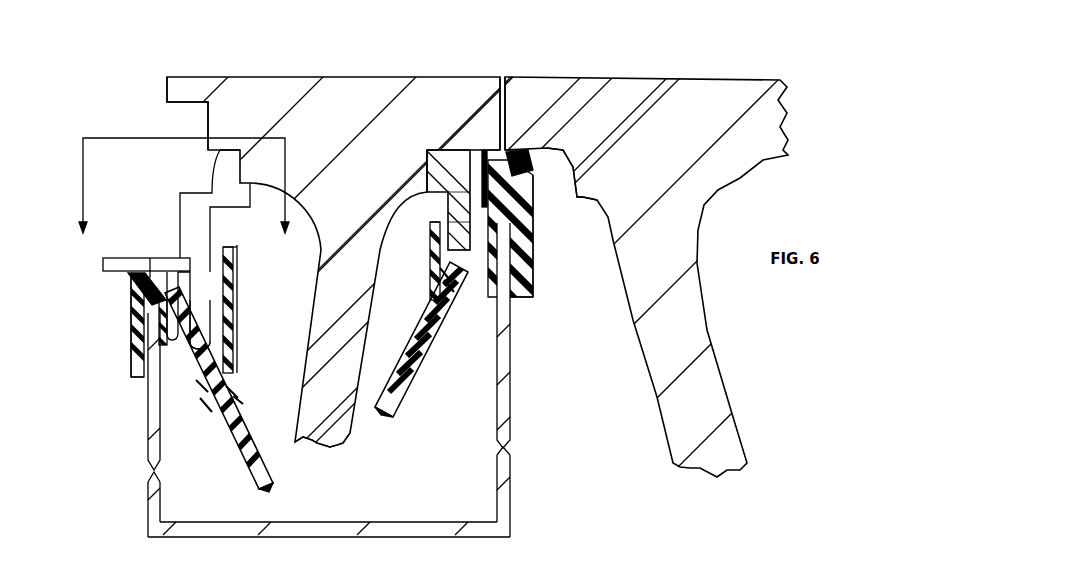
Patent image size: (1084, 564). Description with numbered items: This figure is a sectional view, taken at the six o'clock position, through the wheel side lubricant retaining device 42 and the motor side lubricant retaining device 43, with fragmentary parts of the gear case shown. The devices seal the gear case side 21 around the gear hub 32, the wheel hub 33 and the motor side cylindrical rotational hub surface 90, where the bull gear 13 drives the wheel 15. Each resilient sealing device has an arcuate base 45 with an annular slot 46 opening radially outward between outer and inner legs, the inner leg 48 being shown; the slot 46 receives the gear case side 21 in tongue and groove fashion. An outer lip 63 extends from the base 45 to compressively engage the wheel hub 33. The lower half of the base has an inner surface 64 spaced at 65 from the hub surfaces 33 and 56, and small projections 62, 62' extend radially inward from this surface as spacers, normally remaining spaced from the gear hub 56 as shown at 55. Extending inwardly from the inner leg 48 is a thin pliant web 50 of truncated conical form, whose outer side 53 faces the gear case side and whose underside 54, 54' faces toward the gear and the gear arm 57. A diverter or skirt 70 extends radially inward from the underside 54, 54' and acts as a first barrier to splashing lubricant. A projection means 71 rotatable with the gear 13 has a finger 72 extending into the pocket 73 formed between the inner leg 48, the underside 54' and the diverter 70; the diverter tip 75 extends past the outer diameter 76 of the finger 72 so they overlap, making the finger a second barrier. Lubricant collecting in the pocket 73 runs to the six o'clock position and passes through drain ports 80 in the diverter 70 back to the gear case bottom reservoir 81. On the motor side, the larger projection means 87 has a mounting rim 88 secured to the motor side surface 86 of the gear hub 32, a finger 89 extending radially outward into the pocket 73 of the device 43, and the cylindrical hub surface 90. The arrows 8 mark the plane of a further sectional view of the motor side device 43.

The section line 8- 8 is at (184, 196).
The bull gear 13 is at (352, 440).
The wheel 15 is at (678, 308).
The gear case side 21 is at (505, 408).
The gear hub 32 is at (343, 108).
The wheel hub surface 33 is at (552, 146).
The wheel side sealing device 42 is at (530, 256).
The motor side sealing device 43 is at (128, 338).
The base 45 is at (140, 298).
The annular slot 46 is at (142, 378).
The inner leg 48 is at (170, 338).
The web 50 is at (227, 428).
The outer side of web 53 is at (206, 408).
The underside of web 54 is at (321, 449).
The underside of web 54' is at (260, 392).
The spacing of projections from hub 55 is at (174, 272).
The gear hub 56 is at (490, 145).
The gear arm 57 is at (356, 324).
The projection 62 is at (446, 200).
The projection 62' is at (221, 284).
The outer lip 63 is at (130, 277).
The lower inner diameter surface 64 is at (513, 158).
The spacing 65 is at (152, 277).
The diverter 70 is at (230, 318).
The projection means 71 is at (446, 225).
The finger 72 is at (466, 216).
The pocket 73 is at (203, 388).
The diverter tip 75 is at (432, 224).
The outer diameter of finger 76 is at (459, 263).
The drain ports 80 is at (236, 391).
The gear case bottom reservoir 81 is at (447, 482).
The motor side surface of gear hub 86 is at (220, 149).
The motor side projection means 87 is at (212, 297).
The mounting rim 88 is at (233, 170).
The finger 89 is at (202, 322).
The cylindrical rotational hub surface 90 is at (103, 272).